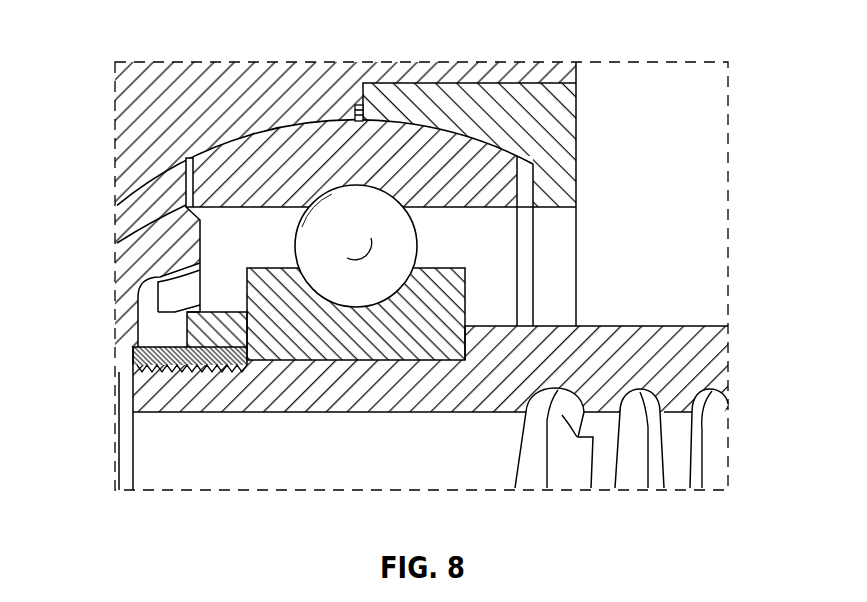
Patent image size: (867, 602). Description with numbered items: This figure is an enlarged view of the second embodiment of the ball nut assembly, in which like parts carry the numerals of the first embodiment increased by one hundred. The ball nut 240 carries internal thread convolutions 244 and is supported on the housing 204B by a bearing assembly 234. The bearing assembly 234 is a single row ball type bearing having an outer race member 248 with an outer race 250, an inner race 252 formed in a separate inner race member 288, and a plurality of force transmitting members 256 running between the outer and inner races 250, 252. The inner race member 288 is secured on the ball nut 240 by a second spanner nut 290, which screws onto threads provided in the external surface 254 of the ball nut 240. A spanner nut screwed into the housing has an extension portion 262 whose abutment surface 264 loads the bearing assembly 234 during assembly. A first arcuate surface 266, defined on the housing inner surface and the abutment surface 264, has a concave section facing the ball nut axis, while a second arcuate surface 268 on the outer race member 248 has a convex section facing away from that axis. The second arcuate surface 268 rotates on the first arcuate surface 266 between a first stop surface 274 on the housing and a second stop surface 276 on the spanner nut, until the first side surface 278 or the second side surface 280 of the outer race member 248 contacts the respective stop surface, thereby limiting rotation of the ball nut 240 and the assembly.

The housing 204B is at (150, 76).
The first arcuate surface 266 is at (333, 113).
The abutment surface 264 is at (359, 104).
The extension portion 262 is at (433, 103).
The second arcuate surface 268 is at (487, 157).
The second side surface 280 is at (527, 170).
The second stop surface 276 is at (533, 187).
The outer race member 248 is at (327, 177).
The outer race 250 is at (307, 195).
The bearing assembly 234 is at (153, 163).
The first side surface 278 is at (117, 207).
The first stop surface 274 is at (117, 243).
The second spanner nut 290 is at (130, 355).
The force transmitting members 256 is at (317, 260).
The inner race 252 is at (315, 292).
The inner race member 288 is at (360, 347).
The external surface 254 is at (600, 325).
The ball nut 240 is at (682, 342).
The internal thread convolutions 244 is at (640, 468).